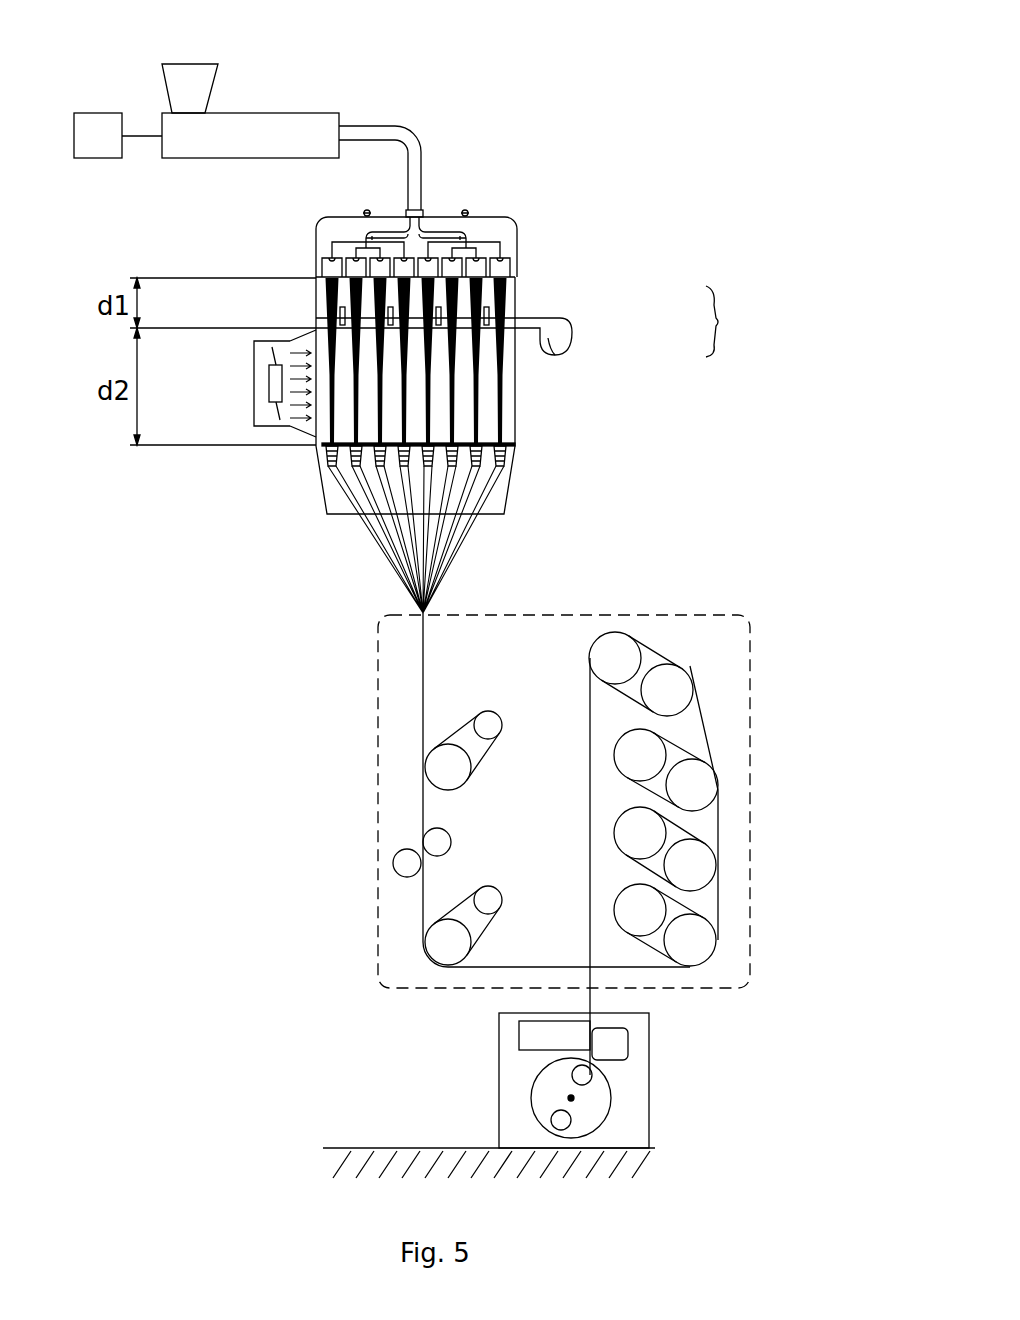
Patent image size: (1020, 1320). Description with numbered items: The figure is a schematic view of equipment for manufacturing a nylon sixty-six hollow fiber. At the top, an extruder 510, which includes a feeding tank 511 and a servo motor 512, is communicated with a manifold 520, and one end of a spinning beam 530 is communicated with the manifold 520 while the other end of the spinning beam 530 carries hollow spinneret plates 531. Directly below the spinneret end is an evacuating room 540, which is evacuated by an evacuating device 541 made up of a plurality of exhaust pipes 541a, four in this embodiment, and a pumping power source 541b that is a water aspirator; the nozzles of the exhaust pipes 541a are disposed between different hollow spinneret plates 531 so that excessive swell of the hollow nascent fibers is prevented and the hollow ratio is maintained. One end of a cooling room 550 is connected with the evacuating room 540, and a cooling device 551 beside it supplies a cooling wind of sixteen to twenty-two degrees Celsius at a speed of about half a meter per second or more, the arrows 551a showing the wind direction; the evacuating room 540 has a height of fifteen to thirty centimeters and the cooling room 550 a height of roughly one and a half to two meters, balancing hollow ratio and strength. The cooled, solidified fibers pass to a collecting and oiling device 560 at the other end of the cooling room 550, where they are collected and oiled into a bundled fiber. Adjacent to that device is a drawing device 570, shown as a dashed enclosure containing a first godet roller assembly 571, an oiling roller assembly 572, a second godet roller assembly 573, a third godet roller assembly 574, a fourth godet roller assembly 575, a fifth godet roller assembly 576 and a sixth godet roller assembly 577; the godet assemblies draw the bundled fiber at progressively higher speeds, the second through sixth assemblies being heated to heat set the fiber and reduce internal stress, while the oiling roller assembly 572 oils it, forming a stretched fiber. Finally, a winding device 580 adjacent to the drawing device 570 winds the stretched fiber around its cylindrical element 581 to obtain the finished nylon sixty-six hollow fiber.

The extruder 510 is at (275, 113).
The feeding tank 511 is at (197, 64).
The servo motor 512 is at (100, 113).
The manifold 520 is at (422, 180).
The spinning beam 530 is at (517, 238).
The hollow spinneret plate 531 is at (515, 265).
The evacuating room 540 is at (316, 310).
The evacuating device 541 is at (548, 321).
The exhaust pipes 541a is at (505, 290).
The pumping power source 541b is at (570, 335).
The cooling room 550 is at (518, 392).
The cooling device 551 is at (254, 383).
The arrows 551a is at (305, 427).
The collecting and oiling device 560 is at (518, 448).
The drawing device 570 is at (690, 613).
The first godet roller assembly 571 is at (465, 765).
The oiling roller assembly 572 is at (445, 845).
The second godet roller assembly 573 is at (460, 955).
The third godet roller assembly 574 is at (620, 632).
The fourth godet roller assembly 575 is at (700, 790).
The fifth godet roller assembly 576 is at (700, 868).
The sixth godet roller assembly 577 is at (700, 952).
The winding device 580 is at (650, 1040).
The cylindrical element 581 is at (590, 1083).